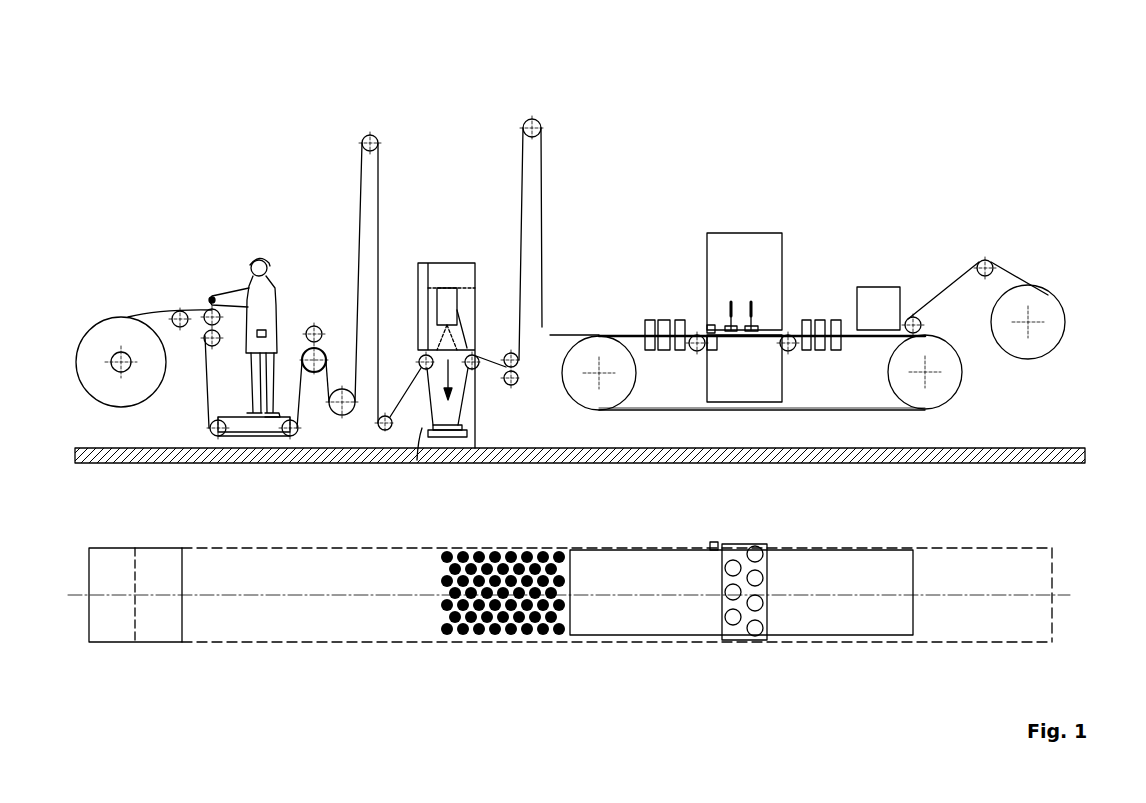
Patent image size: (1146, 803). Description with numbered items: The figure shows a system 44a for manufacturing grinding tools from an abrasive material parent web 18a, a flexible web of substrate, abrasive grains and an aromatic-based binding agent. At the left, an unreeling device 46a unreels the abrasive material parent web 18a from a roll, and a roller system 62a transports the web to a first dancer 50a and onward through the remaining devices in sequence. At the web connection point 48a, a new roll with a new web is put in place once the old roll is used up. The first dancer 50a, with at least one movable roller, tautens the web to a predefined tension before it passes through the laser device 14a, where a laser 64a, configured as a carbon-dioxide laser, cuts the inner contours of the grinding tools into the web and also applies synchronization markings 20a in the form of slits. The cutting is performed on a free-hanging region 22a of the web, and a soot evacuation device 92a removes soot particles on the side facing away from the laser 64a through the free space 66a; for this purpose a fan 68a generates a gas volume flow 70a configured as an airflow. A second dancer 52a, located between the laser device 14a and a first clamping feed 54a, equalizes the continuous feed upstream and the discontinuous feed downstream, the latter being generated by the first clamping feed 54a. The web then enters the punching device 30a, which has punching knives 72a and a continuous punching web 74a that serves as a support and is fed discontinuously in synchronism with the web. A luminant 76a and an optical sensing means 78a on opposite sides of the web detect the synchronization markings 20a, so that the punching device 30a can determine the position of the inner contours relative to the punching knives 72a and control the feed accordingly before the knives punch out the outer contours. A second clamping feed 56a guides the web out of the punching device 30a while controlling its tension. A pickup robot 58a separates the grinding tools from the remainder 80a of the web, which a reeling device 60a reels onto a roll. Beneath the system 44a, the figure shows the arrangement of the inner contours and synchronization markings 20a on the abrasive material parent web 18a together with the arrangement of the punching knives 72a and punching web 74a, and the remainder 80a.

The laser device 14a is at (443, 250).
The abrasive material parent web 18a is at (158, 310).
The synchronization markings 20a is at (513, 540).
The free-hanging region 22a is at (458, 370).
The punching device 30a is at (760, 228).
The system 44a is at (907, 168).
The unreeling device 46a is at (95, 315).
The web connection point 48a is at (212, 282).
The first dancer 50a is at (372, 123).
The second dancer 52a is at (533, 113).
The first clamping feed 54a is at (657, 310).
The second clamping feed 56a is at (820, 310).
The pickup robot 58a is at (885, 287).
The reeling device 60a is at (1060, 283).
The roller system 62a is at (183, 420).
The laser 64a is at (450, 300).
The free space 66a is at (470, 417).
The fan 68a is at (426, 440).
The gas volume flow 70a is at (437, 365).
The punching knives 72a is at (732, 292).
The punching web 74a is at (822, 410).
The luminant 76a is at (707, 325).
The optical sensing means 78a is at (712, 348).
The remainder 80a is at (998, 270).
The soot evacuation device 92a is at (483, 403).